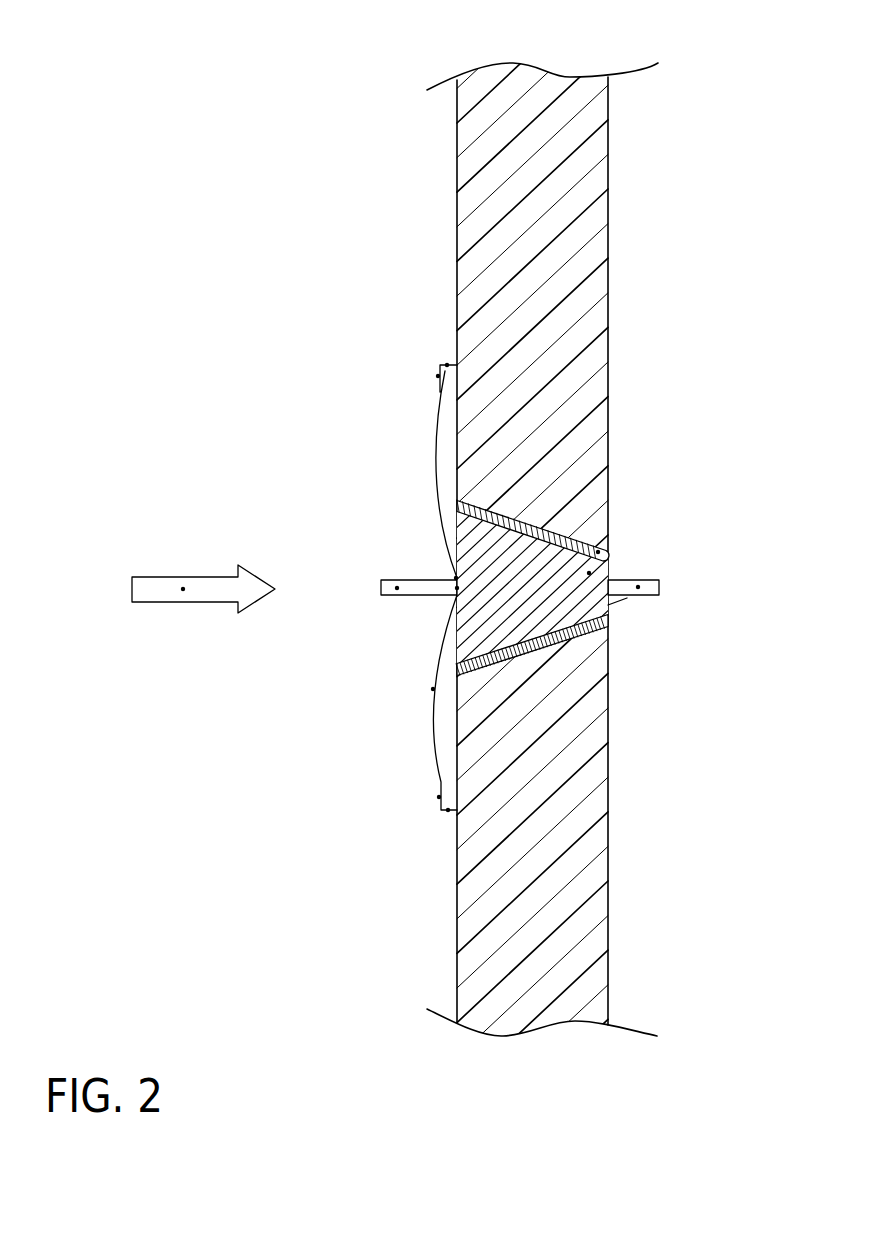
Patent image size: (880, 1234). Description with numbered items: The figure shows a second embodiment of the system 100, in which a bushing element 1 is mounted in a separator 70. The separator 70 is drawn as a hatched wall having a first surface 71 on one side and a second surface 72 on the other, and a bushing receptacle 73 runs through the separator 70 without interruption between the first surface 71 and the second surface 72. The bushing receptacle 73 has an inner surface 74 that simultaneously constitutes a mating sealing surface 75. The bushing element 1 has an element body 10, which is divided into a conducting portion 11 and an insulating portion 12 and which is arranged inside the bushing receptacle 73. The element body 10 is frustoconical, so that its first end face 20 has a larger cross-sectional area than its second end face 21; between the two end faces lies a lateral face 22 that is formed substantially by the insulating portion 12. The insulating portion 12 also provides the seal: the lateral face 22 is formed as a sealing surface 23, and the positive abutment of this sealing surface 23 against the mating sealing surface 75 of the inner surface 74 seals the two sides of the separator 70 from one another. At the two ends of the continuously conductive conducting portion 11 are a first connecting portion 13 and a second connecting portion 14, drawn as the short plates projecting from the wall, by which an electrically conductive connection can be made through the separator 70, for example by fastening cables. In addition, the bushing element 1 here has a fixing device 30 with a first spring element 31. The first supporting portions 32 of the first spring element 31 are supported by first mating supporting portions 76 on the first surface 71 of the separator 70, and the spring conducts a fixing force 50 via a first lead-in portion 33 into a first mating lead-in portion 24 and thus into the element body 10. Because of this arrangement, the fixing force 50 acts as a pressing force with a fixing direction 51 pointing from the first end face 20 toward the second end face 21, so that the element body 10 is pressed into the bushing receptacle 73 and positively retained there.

The bushing element 1 is at (419, 582).
The system 100 is at (167, 188).
The separator 70 is at (535, 598).
The first surface 71 is at (409, 551).
The second surface 72 is at (658, 551).
The bushing receptacle 73 is at (537, 597).
The inner surface 74 is at (469, 649).
The mating sealing surface 75 is at (469, 649).
The first mating supporting portions 76 is at (447, 365).
The element body 10 is at (655, 525).
The conducting portion 11 is at (589, 573).
The insulating portion 12 is at (598, 552).
The first connecting portion 13 is at (397, 588).
The second connecting portion 14 is at (638, 587).
The first end face 20 is at (409, 471).
The second end face 21 is at (647, 648).
The lateral face 22 is at (590, 491).
The sealing surface 23 is at (590, 491).
The first mating lead-in portion 24 is at (457, 588).
The fixing device 30 is at (471, 582).
The first spring element 31 is at (433, 689).
The first supporting portions 32 is at (438, 376).
The first lead-in portion 33 is at (456, 578).
The fixing force 50 is at (199, 564).
The fixing direction 51 is at (183, 589).